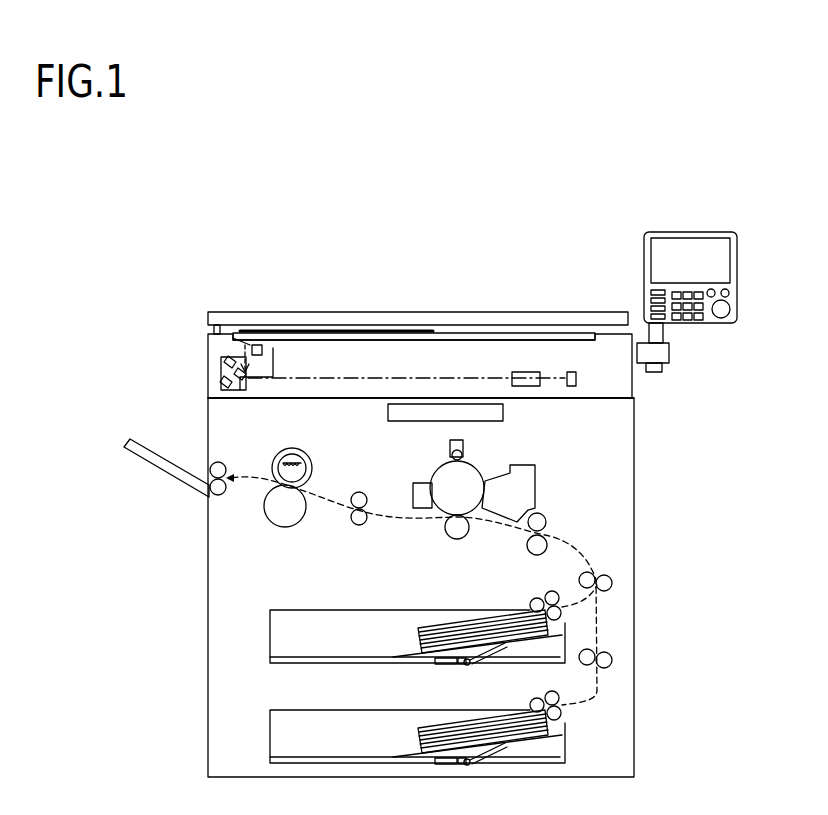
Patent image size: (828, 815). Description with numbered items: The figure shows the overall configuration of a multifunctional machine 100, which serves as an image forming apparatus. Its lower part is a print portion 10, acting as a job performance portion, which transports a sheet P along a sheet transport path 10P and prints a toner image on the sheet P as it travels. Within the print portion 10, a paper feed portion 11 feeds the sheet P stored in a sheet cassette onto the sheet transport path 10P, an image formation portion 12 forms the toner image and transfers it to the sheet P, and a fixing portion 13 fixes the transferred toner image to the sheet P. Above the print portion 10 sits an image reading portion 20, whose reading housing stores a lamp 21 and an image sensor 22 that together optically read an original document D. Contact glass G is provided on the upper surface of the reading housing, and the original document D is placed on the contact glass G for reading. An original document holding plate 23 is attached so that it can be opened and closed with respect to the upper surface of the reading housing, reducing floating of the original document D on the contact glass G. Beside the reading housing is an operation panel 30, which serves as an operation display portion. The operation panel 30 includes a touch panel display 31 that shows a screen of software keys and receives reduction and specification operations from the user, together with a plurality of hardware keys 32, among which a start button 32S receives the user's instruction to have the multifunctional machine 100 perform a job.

The multifunctional machine 100 is at (218, 283).
The print portion 10 is at (637, 522).
The sheet transport path 10P is at (576, 546).
The paper feed portion 11 is at (530, 600).
The image formation portion 12 is at (421, 462).
The fixing portion 13 is at (313, 512).
The image reading portion 20 is at (637, 386).
The lamp 21 is at (238, 339).
The image sensor 22 is at (573, 372).
The original document holding plate 23 is at (492, 318).
The operation panel 30 is at (738, 233).
The touch panel display 31 is at (687, 243).
The hardware keys 32 is at (731, 294).
The start button 32S is at (720, 317).
The original document D is at (410, 330).
The contact glass G is at (463, 338).
The sheet P is at (428, 627).